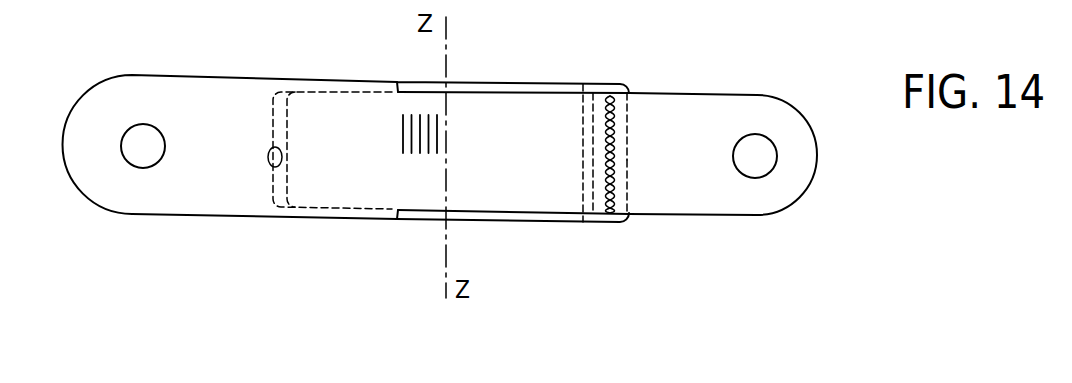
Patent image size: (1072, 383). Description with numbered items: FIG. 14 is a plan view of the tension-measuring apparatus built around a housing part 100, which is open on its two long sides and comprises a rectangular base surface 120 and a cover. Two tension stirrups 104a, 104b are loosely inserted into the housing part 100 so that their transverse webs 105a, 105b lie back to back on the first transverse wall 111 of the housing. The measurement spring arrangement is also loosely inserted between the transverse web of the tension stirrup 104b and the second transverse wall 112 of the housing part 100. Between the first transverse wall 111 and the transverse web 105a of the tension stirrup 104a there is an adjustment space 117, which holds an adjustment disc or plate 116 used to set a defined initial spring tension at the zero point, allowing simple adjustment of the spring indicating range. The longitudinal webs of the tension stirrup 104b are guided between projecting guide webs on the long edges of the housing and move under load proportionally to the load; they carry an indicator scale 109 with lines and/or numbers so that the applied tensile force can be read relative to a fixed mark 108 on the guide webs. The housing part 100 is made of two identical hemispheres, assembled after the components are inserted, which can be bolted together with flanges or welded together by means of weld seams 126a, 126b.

The housing part 100 is at (490, 172).
The tension stirrup 104a is at (800, 177).
The tension stirrup 104b is at (227, 202).
The transverse web 105a is at (583, 110).
The transverse web 105b is at (589, 152).
The fixed mark 108 is at (402, 83).
The indicator scale 109 is at (392, 135).
The first transverse wall 111 is at (617, 193).
The second transverse wall 112 is at (283, 118).
The adjustment disc or plate 116 is at (605, 120).
The adjustment space 117 is at (608, 222).
The rectangular base surface 120 is at (528, 262).
The weld seam 126a is at (271, 165).
The weld seam 126b is at (640, 146).